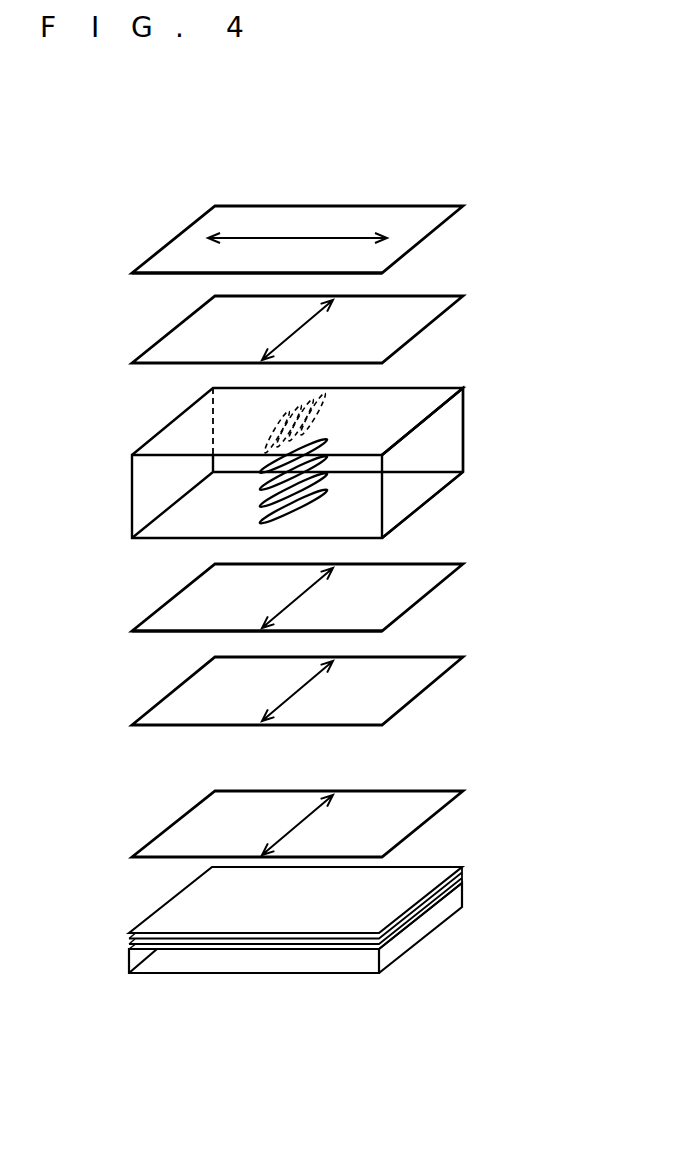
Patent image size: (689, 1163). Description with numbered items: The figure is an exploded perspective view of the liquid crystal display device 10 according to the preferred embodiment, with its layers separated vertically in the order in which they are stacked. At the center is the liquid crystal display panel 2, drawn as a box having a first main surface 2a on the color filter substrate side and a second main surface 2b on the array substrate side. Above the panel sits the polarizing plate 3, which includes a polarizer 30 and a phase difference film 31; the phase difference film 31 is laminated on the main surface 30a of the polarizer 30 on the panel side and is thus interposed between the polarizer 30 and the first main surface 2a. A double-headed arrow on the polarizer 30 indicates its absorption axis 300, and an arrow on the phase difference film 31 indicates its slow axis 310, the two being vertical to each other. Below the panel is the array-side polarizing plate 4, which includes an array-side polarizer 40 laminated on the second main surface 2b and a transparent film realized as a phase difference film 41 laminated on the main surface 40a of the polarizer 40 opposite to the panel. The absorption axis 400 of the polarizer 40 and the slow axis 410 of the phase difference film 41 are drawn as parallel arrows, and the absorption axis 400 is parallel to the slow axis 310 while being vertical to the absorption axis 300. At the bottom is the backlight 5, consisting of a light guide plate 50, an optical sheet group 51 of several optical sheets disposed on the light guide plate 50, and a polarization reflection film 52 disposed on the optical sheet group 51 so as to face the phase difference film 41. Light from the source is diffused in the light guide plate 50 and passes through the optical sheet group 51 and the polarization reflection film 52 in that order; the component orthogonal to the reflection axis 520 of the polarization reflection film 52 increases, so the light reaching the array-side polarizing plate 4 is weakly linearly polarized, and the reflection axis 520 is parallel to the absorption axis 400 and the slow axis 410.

The liquid crystal display device 10 is at (305, 160).
The polarizing plate 3 is at (532, 175).
The polarizer 30 is at (438, 213).
The absorption axis 300 is at (293, 237).
The main surface 30a is at (158, 273).
The phase difference film 31 is at (438, 303).
The slow axis 310 is at (297, 332).
The liquid crystal display panel 2 is at (443, 433).
The first main surface 2a is at (432, 398).
The second main surface 2b is at (420, 508).
The array-side polarizing plate 4 is at (532, 541).
The array-side polarizer 40 is at (437, 575).
The absorption axis 400 is at (297, 600).
The main surface 40a is at (158, 631).
The phase difference film 41 is at (437, 667).
The slow axis 410 is at (297, 695).
The backlight 5 is at (532, 762).
The polarization reflection film 52 is at (437, 797).
The reflection axis 520 is at (297, 827).
The optical sheet group 51 is at (465, 867).
The light guide plate 50 is at (428, 921).